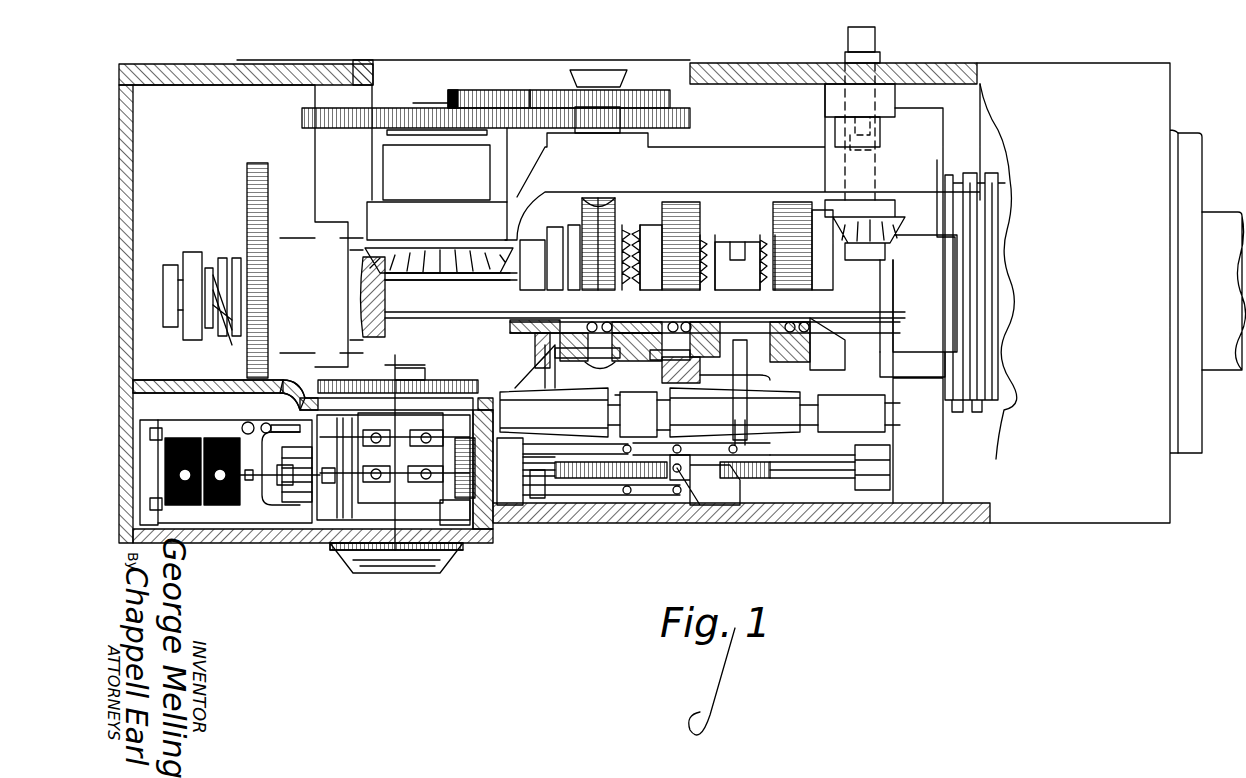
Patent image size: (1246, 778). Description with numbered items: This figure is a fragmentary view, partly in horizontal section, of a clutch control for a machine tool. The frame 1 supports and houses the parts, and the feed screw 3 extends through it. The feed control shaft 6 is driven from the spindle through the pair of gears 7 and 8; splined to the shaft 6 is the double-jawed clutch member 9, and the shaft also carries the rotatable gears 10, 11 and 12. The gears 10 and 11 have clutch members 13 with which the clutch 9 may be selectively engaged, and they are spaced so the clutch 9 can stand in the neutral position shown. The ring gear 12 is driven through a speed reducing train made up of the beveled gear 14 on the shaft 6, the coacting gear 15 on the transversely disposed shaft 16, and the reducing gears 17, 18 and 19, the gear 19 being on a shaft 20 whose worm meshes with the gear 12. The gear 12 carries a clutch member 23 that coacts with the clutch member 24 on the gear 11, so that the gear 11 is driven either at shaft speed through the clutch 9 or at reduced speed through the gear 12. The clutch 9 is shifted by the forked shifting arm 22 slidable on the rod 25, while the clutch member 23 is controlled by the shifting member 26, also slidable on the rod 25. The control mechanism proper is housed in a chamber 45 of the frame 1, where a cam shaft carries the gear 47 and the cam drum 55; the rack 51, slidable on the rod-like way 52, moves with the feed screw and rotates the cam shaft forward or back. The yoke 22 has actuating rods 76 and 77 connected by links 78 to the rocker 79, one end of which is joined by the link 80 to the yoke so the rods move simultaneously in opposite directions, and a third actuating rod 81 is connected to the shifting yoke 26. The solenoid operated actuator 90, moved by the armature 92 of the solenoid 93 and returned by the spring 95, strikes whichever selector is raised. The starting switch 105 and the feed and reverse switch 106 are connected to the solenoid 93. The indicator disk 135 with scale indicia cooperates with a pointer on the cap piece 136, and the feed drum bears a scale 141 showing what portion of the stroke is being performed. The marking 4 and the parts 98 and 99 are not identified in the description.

The frame 1 is at (870, 520).
The feed screw 3 is at (968, 180).
The section line 4 is at (556, 531).
The feed control shaft 6 is at (419, 596).
The gear 7 is at (252, 203).
The gear 8 is at (250, 345).
The double-jawed clutch member 9 is at (738, 250).
The gear 10 is at (790, 210).
The gear 11 is at (690, 210).
The ring gear 12 is at (535, 345).
The clutch members 13 is at (767, 245).
The beveled gear 14 is at (375, 338).
The coacting gear 15 is at (440, 258).
The transversely disposed shaft 16 is at (442, 104).
The reducing gear 17 is at (485, 100).
The reducing gear 18 is at (530, 98).
The reducing gear 19 is at (592, 85).
The shaft 20 is at (592, 210).
The forked shifting arm 22 is at (755, 375).
The clutch member 23 is at (628, 226).
The clutch member 24 is at (650, 226).
The rod 25 is at (820, 412).
The shifting member 26 is at (555, 390).
The chamber 45 is at (165, 430).
The gear 47 is at (445, 428).
The rack 51 is at (775, 470).
The rod-like way 52 is at (830, 468).
The cam drum 55 is at (445, 530).
The actuating rod 76 is at (578, 448).
The actuating rod 77 is at (598, 485).
The links 78 is at (650, 462).
The rocker 79 is at (720, 475).
The link 80 is at (745, 470).
The third actuating rod 81 is at (538, 480).
The solenoid operated actuator 90 is at (290, 502).
The armature 92 is at (258, 505).
The solenoid 93 is at (212, 505).
The spring 95 is at (260, 426).
The frame 98 is at (322, 500).
The cap 99 is at (352, 555).
The starting switch 105 is at (468, 395).
The feed and reverse switch 106 is at (480, 540).
The indicator disk 135 is at (382, 575).
The cap piece 136 is at (400, 575).
The scale 141 is at (462, 500).